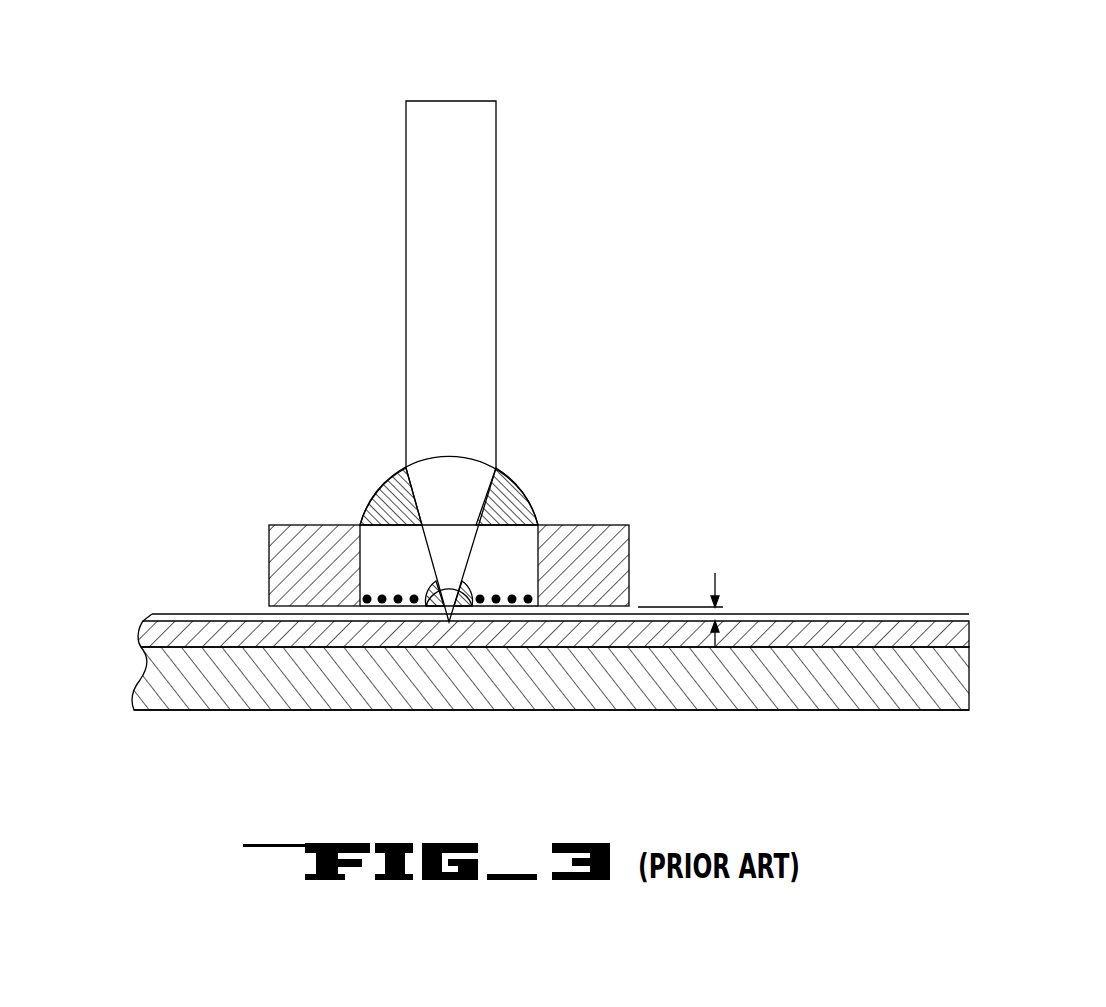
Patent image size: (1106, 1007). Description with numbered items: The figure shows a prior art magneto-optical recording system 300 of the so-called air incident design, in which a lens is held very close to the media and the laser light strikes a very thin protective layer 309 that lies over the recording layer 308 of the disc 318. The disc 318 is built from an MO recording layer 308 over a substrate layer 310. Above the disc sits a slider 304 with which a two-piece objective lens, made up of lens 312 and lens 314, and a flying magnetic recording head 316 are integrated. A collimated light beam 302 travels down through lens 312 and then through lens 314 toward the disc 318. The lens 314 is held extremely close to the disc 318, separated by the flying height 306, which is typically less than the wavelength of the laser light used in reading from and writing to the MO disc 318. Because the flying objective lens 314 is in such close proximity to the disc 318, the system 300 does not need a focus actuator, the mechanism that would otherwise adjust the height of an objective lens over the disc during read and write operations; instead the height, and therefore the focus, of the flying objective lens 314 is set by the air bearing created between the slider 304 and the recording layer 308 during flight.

The MO recording system 300 is at (887, 57).
The collimated light beam 302 is at (497, 225).
The slider 304 is at (583, 525).
The flying height 306 is at (715, 574).
The recording layer 308 is at (969, 636).
The protective layer 309 is at (960, 614).
The substrate layer 310 is at (969, 680).
The lens 312 is at (406, 468).
The flying objective lens 314 is at (431, 584).
The flying magnetic recording head 316 is at (362, 597).
The disc 318 is at (785, 717).